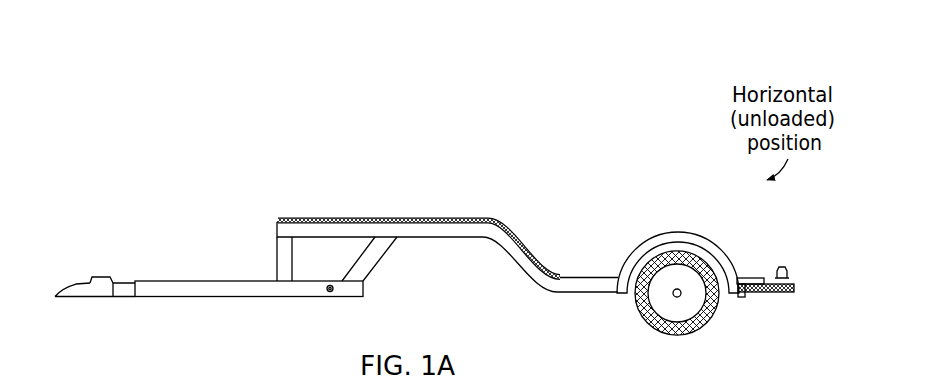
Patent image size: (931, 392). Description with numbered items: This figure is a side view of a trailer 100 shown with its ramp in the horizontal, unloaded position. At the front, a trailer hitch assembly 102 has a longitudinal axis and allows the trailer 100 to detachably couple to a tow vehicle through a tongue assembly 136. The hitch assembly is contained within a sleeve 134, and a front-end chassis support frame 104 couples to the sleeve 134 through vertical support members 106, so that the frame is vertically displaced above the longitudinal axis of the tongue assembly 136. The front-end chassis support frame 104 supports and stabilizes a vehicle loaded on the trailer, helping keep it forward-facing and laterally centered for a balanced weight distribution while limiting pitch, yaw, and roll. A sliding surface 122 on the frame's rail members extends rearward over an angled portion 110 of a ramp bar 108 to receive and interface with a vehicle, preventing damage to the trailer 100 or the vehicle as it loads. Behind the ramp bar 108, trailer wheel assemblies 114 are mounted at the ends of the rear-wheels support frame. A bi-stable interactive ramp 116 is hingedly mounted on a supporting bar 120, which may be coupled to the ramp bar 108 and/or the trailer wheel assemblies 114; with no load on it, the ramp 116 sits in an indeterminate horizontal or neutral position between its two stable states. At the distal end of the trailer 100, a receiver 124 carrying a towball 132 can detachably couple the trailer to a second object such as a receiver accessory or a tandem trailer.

The trailer 100 is at (568, 56).
The trailer hitch assembly 102 is at (121, 305).
The front-end chassis support frame 104 is at (274, 210).
The vertical support members 106 is at (277, 262).
The ramp bar 108 is at (612, 277).
The angled portion 110 is at (495, 253).
The trailer wheel assemblies 114 is at (680, 232).
The bi-stable interactive ramp 116 is at (798, 300).
The supporting bar 120 is at (743, 294).
The sliding surface 122 is at (503, 218).
The receiver 124 is at (748, 261).
The towball 132 is at (781, 266).
The sleeve 134 is at (148, 283).
The tongue assembly 136 is at (78, 283).